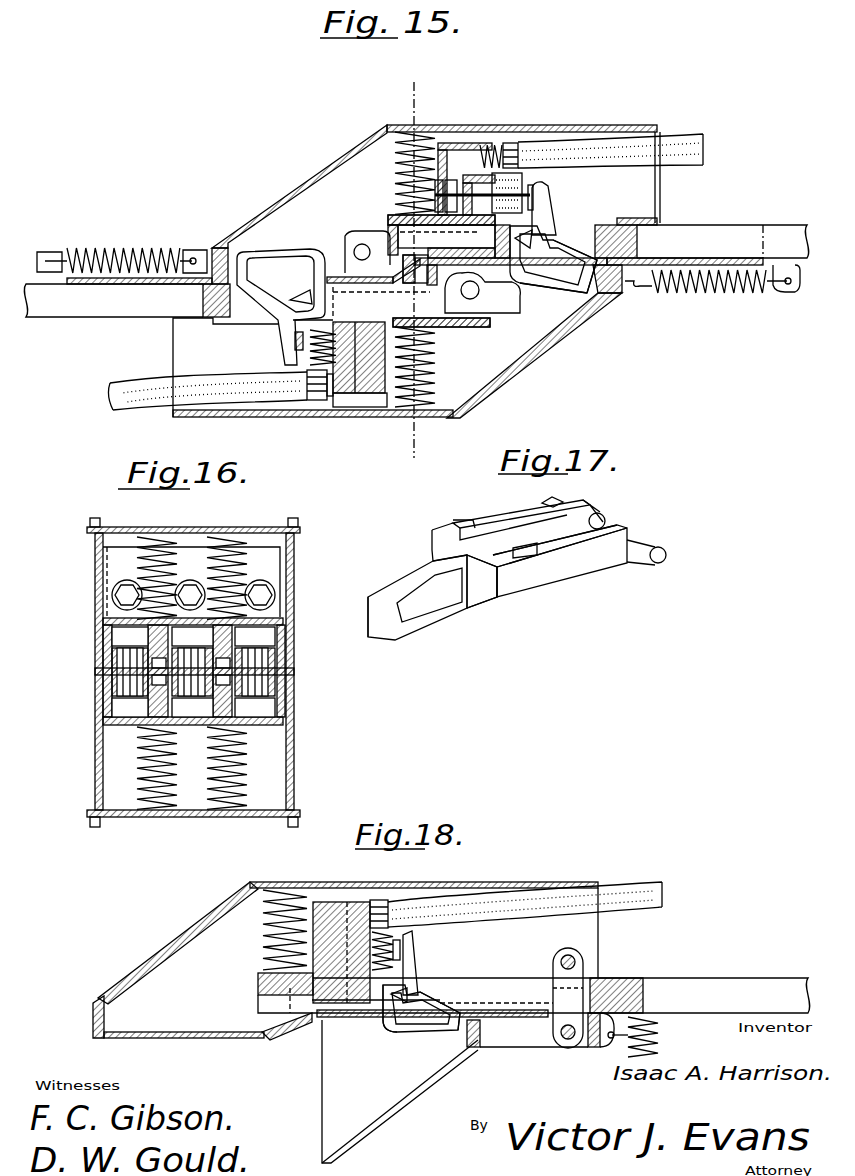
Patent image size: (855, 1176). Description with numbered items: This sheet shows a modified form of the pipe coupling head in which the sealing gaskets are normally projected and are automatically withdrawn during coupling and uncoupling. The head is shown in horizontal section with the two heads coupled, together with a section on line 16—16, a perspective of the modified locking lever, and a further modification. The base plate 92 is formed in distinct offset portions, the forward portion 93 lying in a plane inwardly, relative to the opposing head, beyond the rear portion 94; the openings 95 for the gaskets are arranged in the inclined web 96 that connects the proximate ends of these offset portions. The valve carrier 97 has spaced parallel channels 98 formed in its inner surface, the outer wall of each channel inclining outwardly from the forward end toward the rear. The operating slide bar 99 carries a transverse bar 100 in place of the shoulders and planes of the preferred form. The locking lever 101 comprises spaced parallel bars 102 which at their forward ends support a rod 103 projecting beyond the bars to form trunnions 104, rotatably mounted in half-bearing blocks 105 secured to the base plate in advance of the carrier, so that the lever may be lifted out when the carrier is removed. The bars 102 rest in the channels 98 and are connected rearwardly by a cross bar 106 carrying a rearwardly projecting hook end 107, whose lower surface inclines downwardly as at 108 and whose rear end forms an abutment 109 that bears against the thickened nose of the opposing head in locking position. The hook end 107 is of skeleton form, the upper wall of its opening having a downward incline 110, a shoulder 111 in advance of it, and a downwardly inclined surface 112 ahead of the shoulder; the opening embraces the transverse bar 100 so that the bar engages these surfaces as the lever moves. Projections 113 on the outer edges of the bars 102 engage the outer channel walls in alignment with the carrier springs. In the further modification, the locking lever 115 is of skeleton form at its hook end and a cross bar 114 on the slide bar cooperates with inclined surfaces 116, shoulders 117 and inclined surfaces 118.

In FIG. 15, the section line 16— 16 is at (419, 105).
In FIG. 15, the base plate 92 is at (625, 278).
In FIG. 15, the forward portion of base plate 93 is at (338, 268).
In FIG. 15, the rear portion of base plate 94 is at (614, 227).
In FIG. 16, the openings 95 is at (285, 664).
In FIG. 15, the inclined web 96 is at (437, 265).
In FIG. 15, the valve carrier 97 is at (478, 143).
In FIG. 15, the channels 98 is at (330, 323).
In FIG. 15, the operating slide bar 99 is at (690, 237).
In FIG. 15, the transverse bar 100 is at (527, 236).
In FIG. 17, the locking lever 101 is at (617, 567).
In FIG. 16, the parallel bars 102 is at (148, 700).
In FIG. 17, the parallel bars 102 is at (582, 565).
In FIG. 17, the rod 103 is at (597, 522).
In FIG. 17, the trunnions 104 is at (655, 547).
In FIG. 15, the half-bearing blocks 105 is at (337, 268).
In FIG. 17, the cross bar 106 is at (482, 585).
In FIG. 17, the hook end 107 is at (433, 562).
In FIG. 17, the inclined lower surface 108 is at (425, 613).
In FIG. 17, the abutment 109 is at (380, 622).
In FIG. 15, the downward incline 110 is at (520, 235).
In FIG. 15, the shoulder 111 is at (548, 295).
In FIG. 15, the downwardly inclined surface 112 is at (560, 262).
In FIG. 15, the projections 113 is at (343, 398).
In FIG. 17, the projections 113 is at (525, 557).
In FIG. 18, the cross bar 114 is at (397, 997).
In FIG. 18, the locking lever 115 is at (497, 990).
In FIG. 18, the inclined surfaces 116 is at (405, 998).
In FIG. 18, the shoulders 117 is at (403, 1018).
In FIG. 18, the inclined surfaces 118 is at (437, 1012).